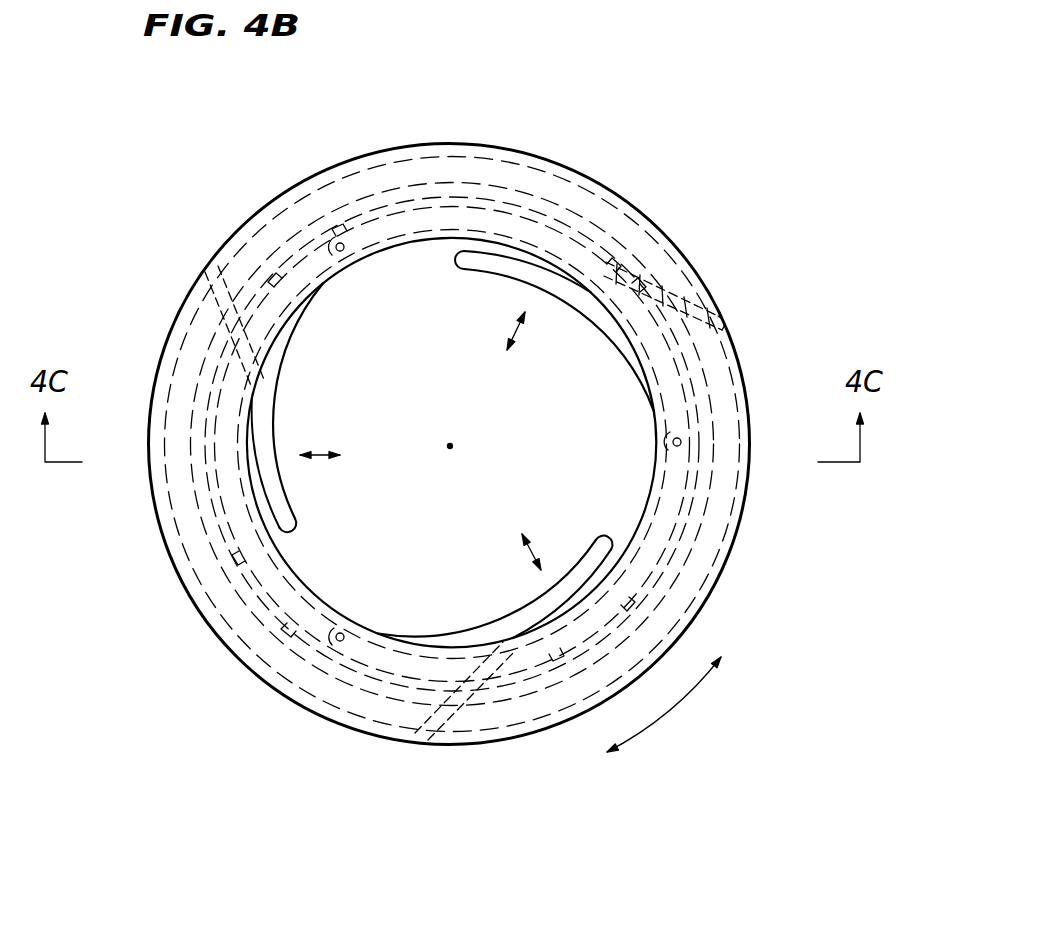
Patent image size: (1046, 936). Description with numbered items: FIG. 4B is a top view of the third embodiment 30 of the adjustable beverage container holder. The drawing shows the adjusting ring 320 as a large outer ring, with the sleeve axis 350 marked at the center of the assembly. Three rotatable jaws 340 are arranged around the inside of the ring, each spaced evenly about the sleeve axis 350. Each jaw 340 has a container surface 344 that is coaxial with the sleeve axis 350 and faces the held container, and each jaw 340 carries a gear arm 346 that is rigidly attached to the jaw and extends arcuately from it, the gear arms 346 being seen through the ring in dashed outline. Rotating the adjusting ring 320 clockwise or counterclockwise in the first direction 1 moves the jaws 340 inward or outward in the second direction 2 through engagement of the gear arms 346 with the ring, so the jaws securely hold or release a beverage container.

The third embodiment 30 is at (630, 92).
The adjusting ring 320 is at (622, 190).
The rotatable jaw 340 is at (492, 268).
The container surface 344 is at (280, 420).
The gear arm 346 is at (720, 292).
The sleeve axis 350 is at (450, 447).
The first direction 1 is at (664, 704).
The second direction 2 is at (426, 441).